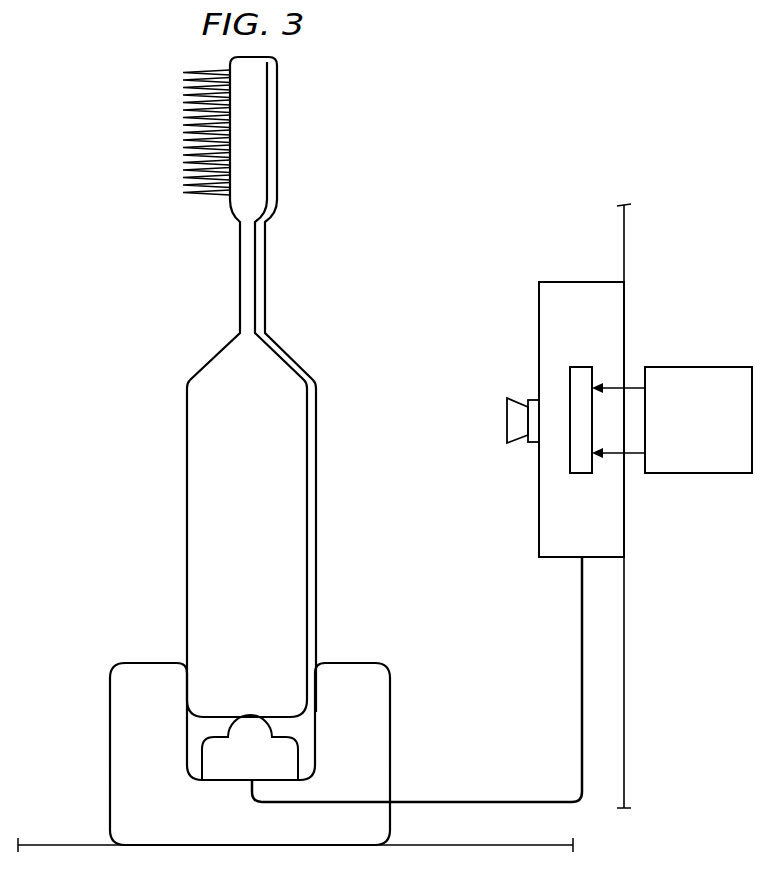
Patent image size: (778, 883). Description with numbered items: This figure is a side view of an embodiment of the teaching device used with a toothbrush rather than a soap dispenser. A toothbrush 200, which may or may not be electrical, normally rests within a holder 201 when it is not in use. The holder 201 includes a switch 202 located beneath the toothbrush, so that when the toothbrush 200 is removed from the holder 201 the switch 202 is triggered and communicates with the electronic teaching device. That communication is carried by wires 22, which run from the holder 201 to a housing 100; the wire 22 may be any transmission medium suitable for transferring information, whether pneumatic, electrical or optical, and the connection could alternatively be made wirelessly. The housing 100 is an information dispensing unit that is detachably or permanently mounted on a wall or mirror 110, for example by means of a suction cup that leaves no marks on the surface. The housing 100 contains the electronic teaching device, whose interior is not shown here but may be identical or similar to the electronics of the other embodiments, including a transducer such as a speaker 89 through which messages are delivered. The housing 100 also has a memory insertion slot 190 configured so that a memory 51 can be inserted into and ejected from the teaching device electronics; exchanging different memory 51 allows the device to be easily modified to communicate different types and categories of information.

The toothbrush 200 is at (231, 562).
The holder 201 is at (110, 760).
The switch 202 is at (236, 781).
The wire 22 is at (476, 800).
The wall or mirror 110 is at (676, 290).
The housing 100 is at (539, 343).
The memory insertion slot 190 is at (581, 366).
The memory 51 is at (685, 460).
The speaker 89 is at (506, 418).